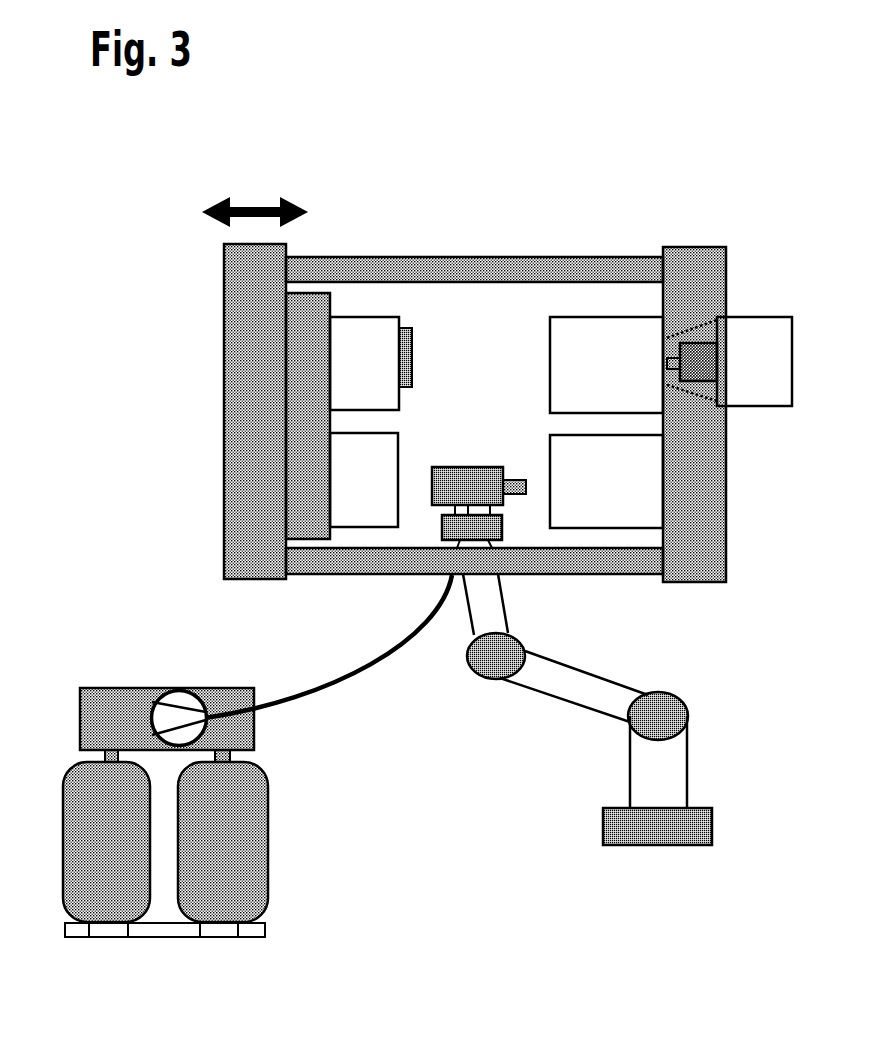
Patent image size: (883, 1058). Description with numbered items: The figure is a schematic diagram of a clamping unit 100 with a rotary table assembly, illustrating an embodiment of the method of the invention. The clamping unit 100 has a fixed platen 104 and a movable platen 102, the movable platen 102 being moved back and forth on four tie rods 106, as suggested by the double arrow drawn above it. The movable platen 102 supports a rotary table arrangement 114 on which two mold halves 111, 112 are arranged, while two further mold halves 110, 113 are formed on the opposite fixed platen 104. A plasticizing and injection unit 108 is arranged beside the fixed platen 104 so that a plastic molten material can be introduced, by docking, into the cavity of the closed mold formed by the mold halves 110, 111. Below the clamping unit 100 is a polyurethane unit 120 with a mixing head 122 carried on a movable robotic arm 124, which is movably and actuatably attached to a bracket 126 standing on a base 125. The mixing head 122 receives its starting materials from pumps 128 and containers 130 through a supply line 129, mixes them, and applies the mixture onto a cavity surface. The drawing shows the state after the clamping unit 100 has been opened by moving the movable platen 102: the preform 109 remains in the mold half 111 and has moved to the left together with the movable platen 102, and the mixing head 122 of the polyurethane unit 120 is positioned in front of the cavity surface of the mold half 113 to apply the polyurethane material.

The clamping unit 100 is at (722, 187).
The movable platen 102 is at (250, 317).
The fixed platen 104 is at (677, 563).
The tie rods 106 is at (540, 268).
The plasticizing and injection unit 108 is at (760, 378).
The preform 109 is at (412, 349).
The mold half 110 is at (598, 353).
The mold half 111 is at (352, 351).
The mold half 112 is at (363, 503).
The mold half 113 is at (632, 493).
The rotary table arrangement 114 is at (302, 480).
The polyurethane unit 120 is at (592, 749).
The mixing head 122 is at (445, 467).
The robotic arm 124 is at (535, 678).
The robot column 125 is at (663, 762).
The bracket 126 is at (665, 718).
The pumps 128 is at (173, 700).
The supply hose 129 is at (360, 667).
The containers 130 is at (127, 851).